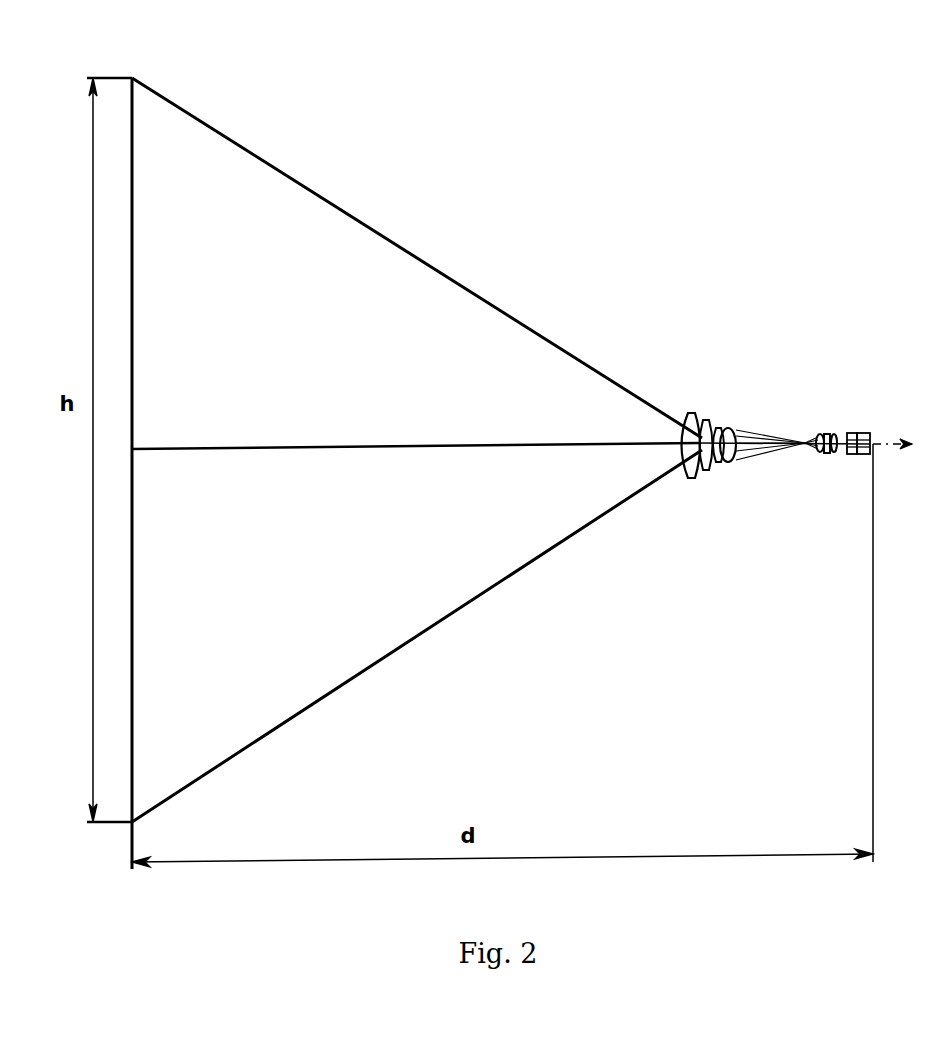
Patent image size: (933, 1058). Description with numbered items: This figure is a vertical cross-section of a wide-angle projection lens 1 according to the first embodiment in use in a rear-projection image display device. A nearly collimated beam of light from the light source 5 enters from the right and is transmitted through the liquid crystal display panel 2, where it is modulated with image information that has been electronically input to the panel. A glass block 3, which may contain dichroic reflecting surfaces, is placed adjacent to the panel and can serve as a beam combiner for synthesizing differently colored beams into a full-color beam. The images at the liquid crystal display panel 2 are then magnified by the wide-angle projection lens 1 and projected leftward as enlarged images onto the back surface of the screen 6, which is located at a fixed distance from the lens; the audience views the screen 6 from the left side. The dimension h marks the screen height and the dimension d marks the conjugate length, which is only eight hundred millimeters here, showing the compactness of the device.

The wide-angle projection lens 1 is at (677, 380).
The liquid crystal display panel 2 is at (868, 433).
The glass block 3 is at (855, 432).
The light source 5 is at (903, 455).
The screen 6 is at (132, 557).